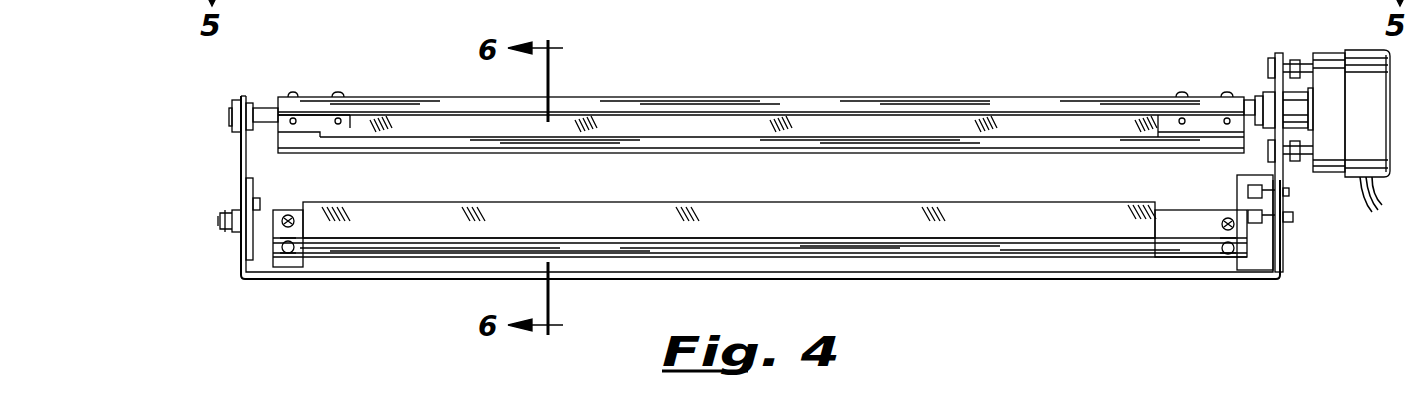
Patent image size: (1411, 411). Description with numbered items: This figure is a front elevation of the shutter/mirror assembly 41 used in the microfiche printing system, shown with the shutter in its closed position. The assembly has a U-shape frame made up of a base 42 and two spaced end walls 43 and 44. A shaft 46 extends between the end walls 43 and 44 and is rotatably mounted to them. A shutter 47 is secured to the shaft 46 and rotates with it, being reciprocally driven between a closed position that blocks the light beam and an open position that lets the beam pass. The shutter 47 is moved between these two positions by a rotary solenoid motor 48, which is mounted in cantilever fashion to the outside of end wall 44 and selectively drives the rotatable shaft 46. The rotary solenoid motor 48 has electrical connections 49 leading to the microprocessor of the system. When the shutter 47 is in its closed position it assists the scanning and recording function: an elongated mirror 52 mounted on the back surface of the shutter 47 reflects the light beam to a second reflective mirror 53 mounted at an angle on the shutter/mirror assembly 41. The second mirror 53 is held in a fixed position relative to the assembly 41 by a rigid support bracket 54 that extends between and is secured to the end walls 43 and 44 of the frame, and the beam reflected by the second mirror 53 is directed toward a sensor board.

The shutter/mirror assembly 41 is at (1008, 80).
The base 42 is at (659, 279).
The end wall 43 is at (241, 166).
The end wall 44 is at (1283, 246).
The shaft 46 is at (265, 110).
The shutter 47 is at (1163, 123).
The rotary solenoid motor 48 is at (1360, 57).
The electrical connections 49 is at (1385, 205).
The elongated mirror 52 is at (793, 130).
The second reflective mirror 53 is at (895, 215).
The rigid support bracket 54 is at (1190, 215).